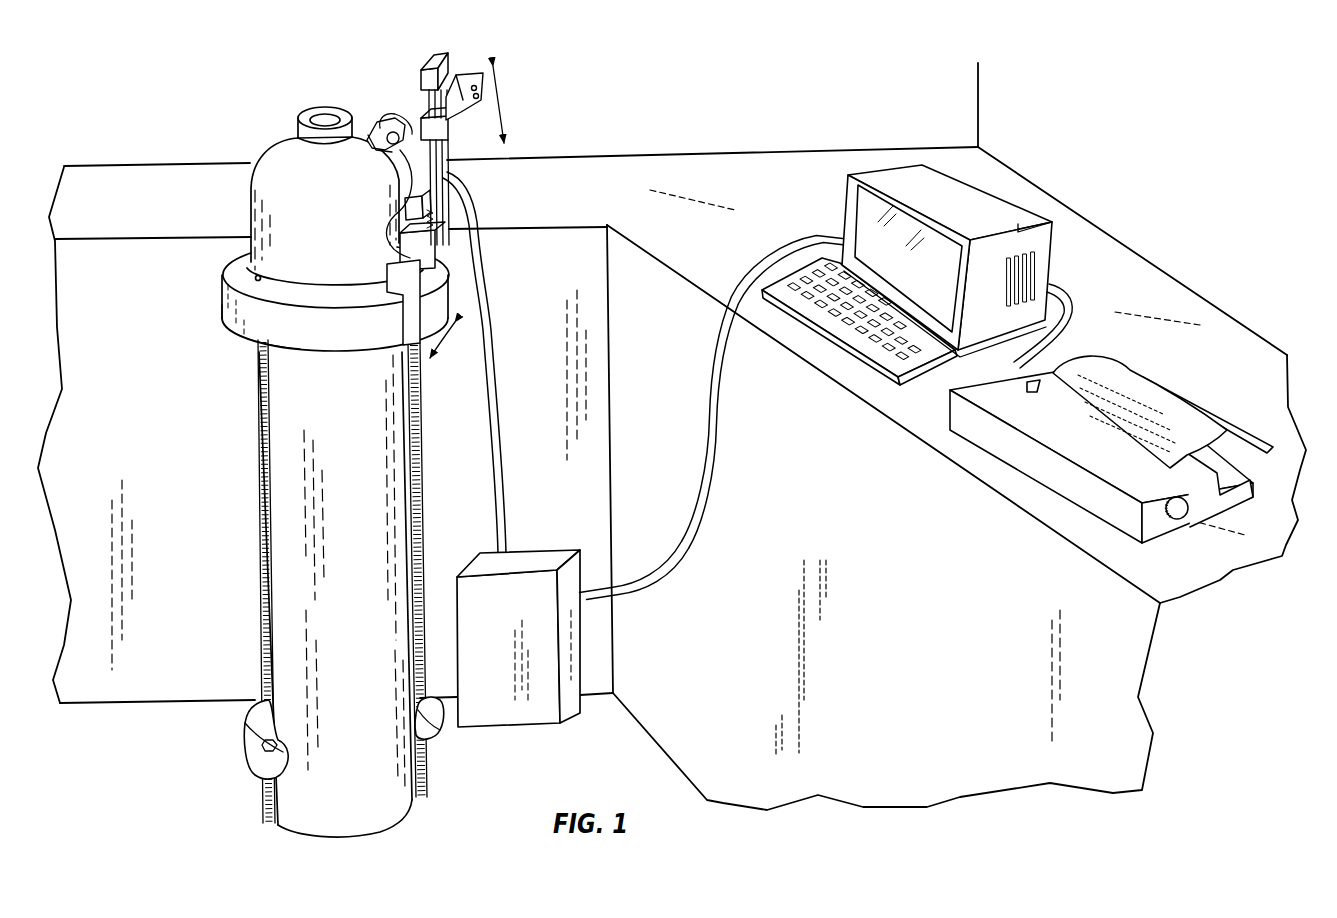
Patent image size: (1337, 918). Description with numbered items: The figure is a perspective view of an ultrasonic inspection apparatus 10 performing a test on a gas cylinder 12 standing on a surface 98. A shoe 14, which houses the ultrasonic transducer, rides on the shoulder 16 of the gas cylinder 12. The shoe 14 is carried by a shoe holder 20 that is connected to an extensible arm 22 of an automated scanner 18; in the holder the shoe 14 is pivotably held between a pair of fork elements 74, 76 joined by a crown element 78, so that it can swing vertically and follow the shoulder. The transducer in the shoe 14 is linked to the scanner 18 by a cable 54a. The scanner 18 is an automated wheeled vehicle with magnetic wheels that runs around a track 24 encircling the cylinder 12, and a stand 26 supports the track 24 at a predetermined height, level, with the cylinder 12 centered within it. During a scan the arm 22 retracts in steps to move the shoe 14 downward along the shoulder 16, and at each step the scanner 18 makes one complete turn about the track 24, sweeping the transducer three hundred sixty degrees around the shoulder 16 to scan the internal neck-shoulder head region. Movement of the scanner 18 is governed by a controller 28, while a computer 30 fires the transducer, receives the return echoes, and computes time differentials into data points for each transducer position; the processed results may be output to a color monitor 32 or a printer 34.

The ultrasonic inspection apparatus 10 is at (663, 108).
The gas cylinder 12 is at (253, 453).
The shoe 14 is at (388, 125).
The shoulder 16 is at (277, 205).
The automated scanner 18 is at (477, 211).
The shoe holder 20 is at (412, 130).
The extensible arm 22 is at (448, 168).
The track 24 is at (252, 268).
The stand 26 is at (245, 339).
The controller 28 is at (496, 729).
The computer 30 is at (924, 241).
The color monitor 32 is at (903, 185).
The printer 34 is at (1050, 432).
The carriage 54a is at (412, 248).
The fork element 74 is at (376, 150).
The fork element 76 is at (407, 122).
The crown element 78 is at (398, 168).
The surface 98 is at (188, 812).